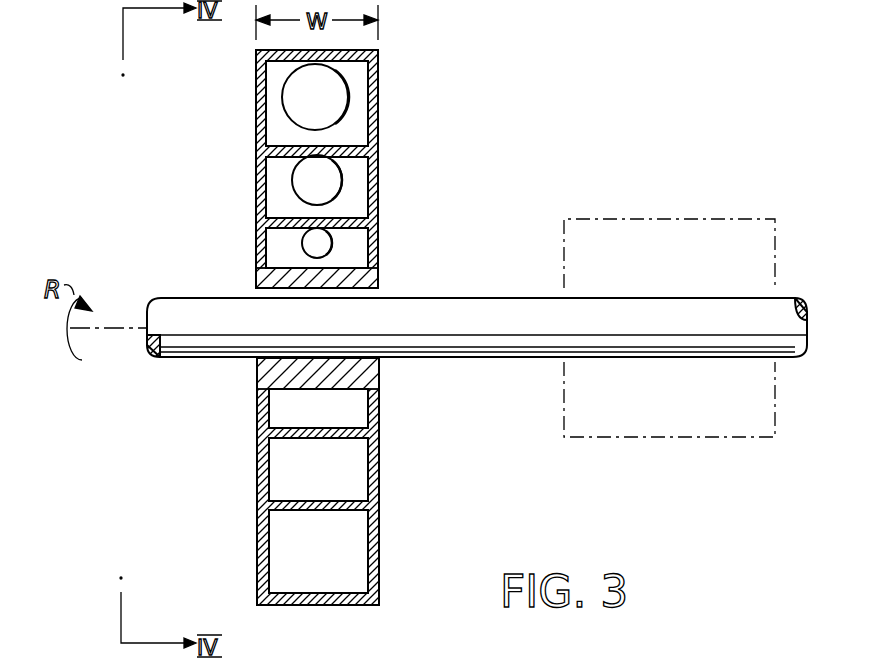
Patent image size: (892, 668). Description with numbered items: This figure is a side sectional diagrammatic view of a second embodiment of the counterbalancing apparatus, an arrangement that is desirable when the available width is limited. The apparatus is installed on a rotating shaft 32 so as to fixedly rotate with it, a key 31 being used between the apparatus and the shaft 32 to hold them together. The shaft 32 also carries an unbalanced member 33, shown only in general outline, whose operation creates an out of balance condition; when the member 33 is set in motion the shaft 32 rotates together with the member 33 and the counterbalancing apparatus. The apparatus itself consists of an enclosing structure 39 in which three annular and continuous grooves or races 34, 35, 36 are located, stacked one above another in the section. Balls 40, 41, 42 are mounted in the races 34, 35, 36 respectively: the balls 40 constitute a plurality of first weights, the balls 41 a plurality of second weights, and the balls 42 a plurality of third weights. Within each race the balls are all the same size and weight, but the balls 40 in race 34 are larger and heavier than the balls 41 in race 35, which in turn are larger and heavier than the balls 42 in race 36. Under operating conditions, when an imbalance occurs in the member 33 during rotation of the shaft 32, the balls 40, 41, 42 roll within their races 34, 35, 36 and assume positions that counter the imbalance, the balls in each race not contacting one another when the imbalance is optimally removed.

The key 31 is at (315, 176).
The shaft 32 is at (490, 298).
The unbalanced member 33 is at (640, 217).
The groove or race 34 is at (343, 142).
The groove or race 35 is at (342, 215).
The groove or race 36 is at (343, 263).
The enclosing structure 39 is at (375, 515).
The balls 40 is at (296, 88).
The balls 41 is at (298, 180).
The balls 42 is at (300, 243).